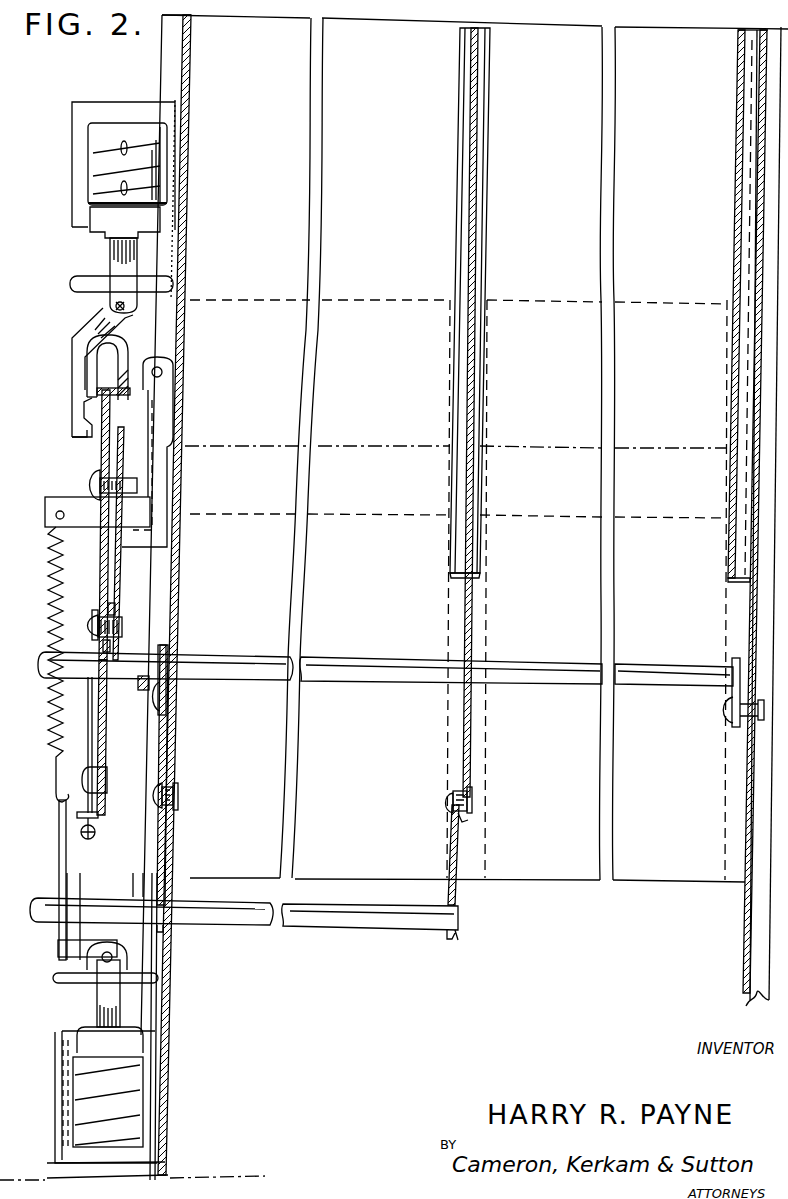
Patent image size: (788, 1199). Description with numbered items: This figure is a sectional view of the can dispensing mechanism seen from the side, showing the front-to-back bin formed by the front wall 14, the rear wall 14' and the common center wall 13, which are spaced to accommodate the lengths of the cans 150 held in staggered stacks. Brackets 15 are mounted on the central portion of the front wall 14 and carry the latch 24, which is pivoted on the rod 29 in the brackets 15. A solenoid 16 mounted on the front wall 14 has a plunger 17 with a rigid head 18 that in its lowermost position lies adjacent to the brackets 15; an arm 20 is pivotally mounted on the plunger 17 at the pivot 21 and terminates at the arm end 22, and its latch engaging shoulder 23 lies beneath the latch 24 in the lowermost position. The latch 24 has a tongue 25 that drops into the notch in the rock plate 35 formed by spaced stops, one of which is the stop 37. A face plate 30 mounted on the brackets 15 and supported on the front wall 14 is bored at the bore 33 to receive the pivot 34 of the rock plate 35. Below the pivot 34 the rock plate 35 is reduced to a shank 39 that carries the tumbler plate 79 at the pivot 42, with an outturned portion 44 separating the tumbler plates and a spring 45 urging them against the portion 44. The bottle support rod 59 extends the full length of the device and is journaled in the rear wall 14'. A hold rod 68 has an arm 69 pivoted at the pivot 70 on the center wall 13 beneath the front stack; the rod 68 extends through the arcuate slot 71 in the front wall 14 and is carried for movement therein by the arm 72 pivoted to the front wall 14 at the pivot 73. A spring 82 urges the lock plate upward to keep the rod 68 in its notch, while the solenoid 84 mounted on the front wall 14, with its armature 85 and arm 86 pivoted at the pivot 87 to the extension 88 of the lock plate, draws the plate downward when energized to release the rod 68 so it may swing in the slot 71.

The center wall 13 is at (477, 401).
The front wall 14 is at (138, 603).
The rear wall 14' is at (742, 516).
The brackets 15 is at (160, 413).
The solenoid 16 is at (153, 152).
The plunger 17 is at (130, 225).
The rigid head 18 is at (121, 266).
The arm 20 is at (90, 329).
The pivot 21 is at (130, 309).
The arm end 22 is at (77, 432).
The latch engaging shoulder 23 is at (72, 413).
The latch 24 is at (127, 348).
The tongue 25 is at (113, 378).
The rod 29 is at (168, 372).
The face plate 30 is at (119, 572).
The bore 33 is at (113, 613).
The pivot 34 is at (110, 628).
The rock plate 35 is at (101, 557).
The stop 37 is at (103, 391).
The shank 39 is at (104, 733).
The pivot 42 is at (102, 787).
The outturned portion 44 is at (97, 818).
The spring 45 is at (96, 838).
The bottle support rod 59 is at (352, 679).
The hold rod 68 is at (262, 926).
The arm 69 is at (459, 849).
The pivot 70 is at (472, 803).
The arcuate slot 71 is at (173, 928).
The arm 72 is at (162, 853).
The pivot 73 is at (179, 796).
The tumbler plate 79 is at (88, 716).
The spring 82 is at (50, 704).
The solenoid 84 is at (126, 1084).
The armature 85 is at (116, 1046).
The arm 86 is at (116, 999).
The pivot 87 is at (129, 936).
The extension 88 is at (88, 941).
The cans 150 is at (375, 300).